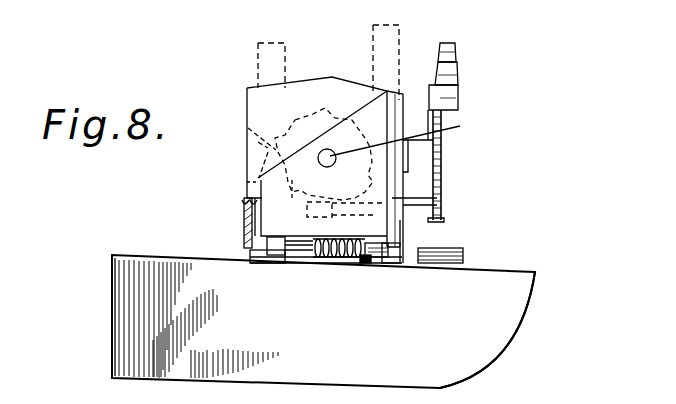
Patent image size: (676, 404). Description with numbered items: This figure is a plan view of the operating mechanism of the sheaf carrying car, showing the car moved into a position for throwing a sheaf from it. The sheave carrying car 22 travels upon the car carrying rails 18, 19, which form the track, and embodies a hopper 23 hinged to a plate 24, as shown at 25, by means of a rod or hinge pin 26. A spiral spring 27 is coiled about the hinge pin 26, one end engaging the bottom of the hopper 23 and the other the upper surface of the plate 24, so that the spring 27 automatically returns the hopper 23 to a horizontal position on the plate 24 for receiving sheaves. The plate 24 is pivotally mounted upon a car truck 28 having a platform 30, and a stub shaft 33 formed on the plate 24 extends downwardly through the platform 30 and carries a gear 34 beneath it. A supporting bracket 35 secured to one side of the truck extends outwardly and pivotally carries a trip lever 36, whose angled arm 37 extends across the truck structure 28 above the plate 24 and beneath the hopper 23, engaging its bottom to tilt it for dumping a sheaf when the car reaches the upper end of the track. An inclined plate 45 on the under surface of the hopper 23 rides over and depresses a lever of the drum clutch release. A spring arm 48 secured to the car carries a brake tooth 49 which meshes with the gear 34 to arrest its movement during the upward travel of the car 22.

The car carrying rail 18 is at (257, 43).
The car carrying rail 19 is at (406, 30).
The sheave carrying car 22 is at (110, 310).
The hopper 23 is at (490, 330).
The plate 24 is at (283, 222).
The hinge connection 25 is at (265, 255).
The hinge pin 26 is at (303, 257).
The spiral spring 27 is at (352, 263).
The car truck 28 is at (317, 81).
The platform 30 is at (250, 152).
The stub shaft 33 is at (404, 141).
The gear 34 is at (328, 108).
The supporting bracket 35 is at (418, 149).
The trip lever 36 is at (458, 91).
The angled arm 37 is at (413, 213).
The plate 45 is at (463, 252).
The spring arm 48 is at (247, 182).
The brake tooth 49 is at (248, 128).